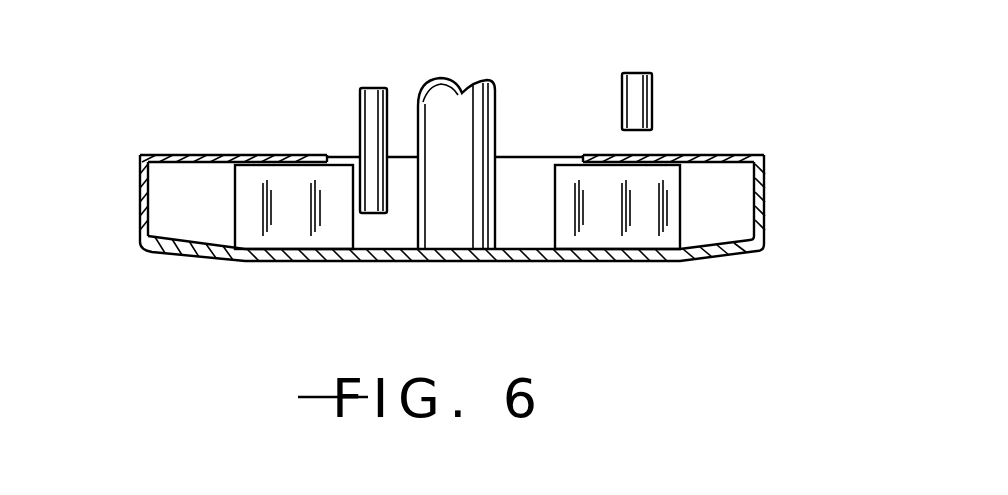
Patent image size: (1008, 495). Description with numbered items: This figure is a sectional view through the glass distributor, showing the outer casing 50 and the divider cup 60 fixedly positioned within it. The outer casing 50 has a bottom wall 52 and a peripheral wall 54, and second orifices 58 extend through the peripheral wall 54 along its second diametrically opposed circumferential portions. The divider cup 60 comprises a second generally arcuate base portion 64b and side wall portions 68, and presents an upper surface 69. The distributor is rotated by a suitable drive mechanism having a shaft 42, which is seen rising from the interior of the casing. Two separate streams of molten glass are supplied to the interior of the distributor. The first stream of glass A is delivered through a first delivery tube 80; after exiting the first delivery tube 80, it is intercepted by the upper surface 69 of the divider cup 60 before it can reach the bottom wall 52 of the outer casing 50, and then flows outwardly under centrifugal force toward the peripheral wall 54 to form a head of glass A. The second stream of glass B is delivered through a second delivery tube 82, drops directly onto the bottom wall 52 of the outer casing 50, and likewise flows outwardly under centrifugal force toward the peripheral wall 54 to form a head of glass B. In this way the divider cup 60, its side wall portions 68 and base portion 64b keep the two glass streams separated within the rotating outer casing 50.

The shaft 42 is at (413, 105).
The outer casing 50 is at (456, 206).
The bottom wall 52 is at (363, 262).
The peripheral wall 54 is at (767, 202).
The second orifices 58 is at (141, 177).
The divider cup 60 is at (252, 187).
The second generally arcuate base portion 64b is at (517, 167).
The side wall portions 68 is at (431, 205).
The upper surface 69 is at (697, 155).
The first delivery tube 80 is at (652, 90).
The second delivery tube 82 is at (375, 118).